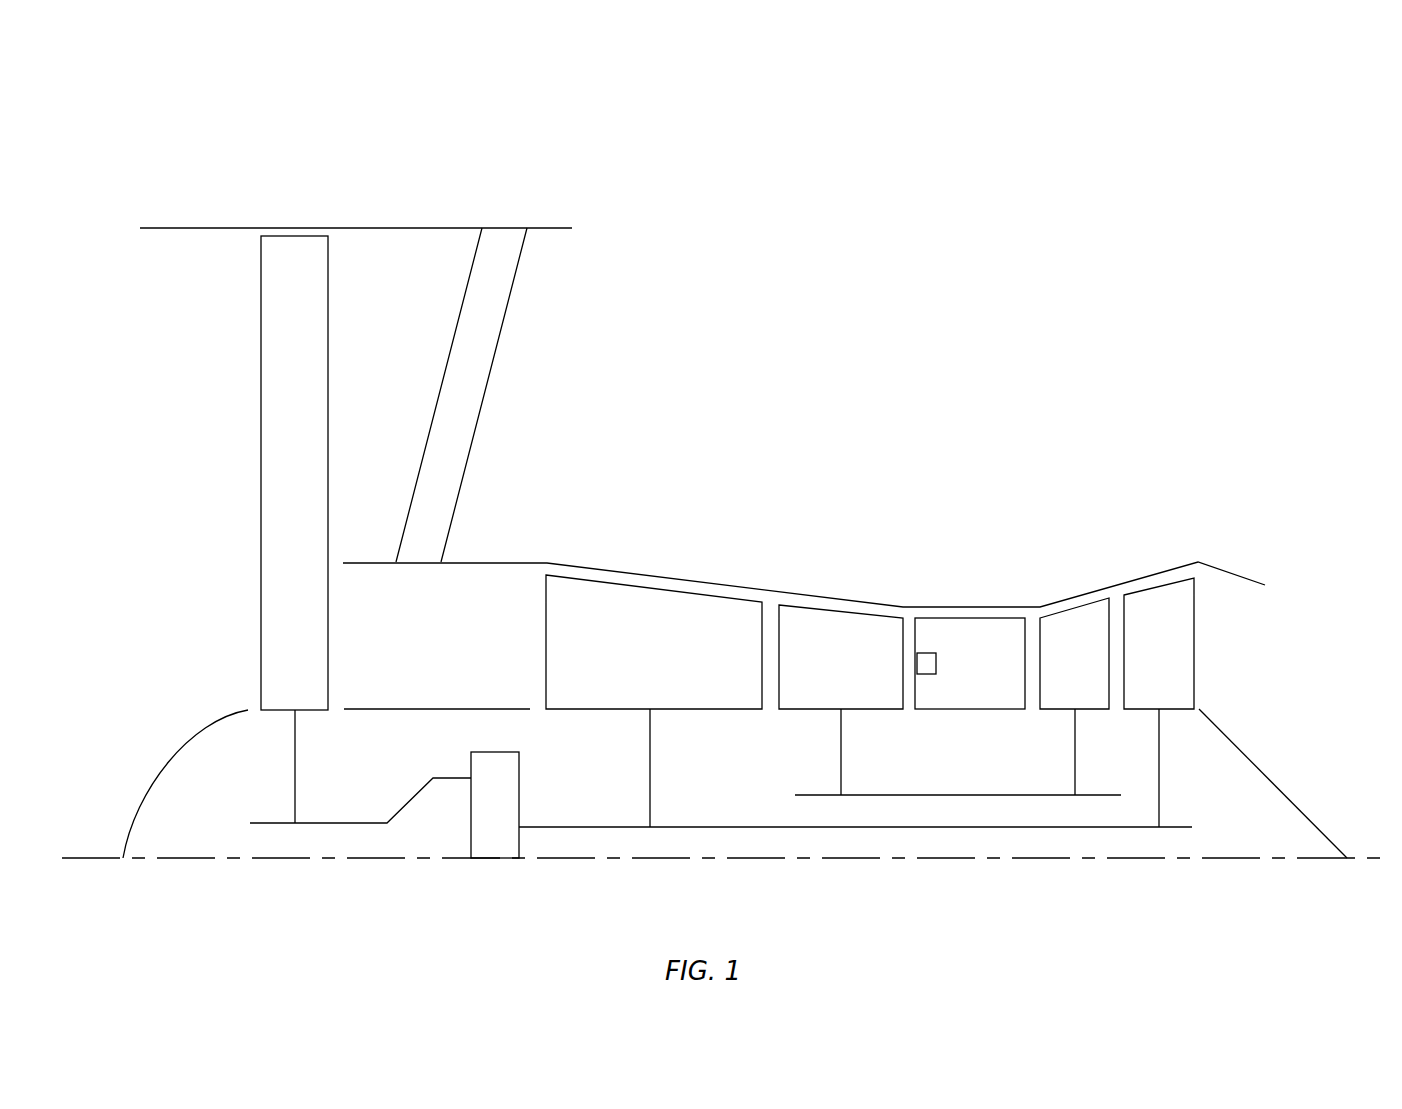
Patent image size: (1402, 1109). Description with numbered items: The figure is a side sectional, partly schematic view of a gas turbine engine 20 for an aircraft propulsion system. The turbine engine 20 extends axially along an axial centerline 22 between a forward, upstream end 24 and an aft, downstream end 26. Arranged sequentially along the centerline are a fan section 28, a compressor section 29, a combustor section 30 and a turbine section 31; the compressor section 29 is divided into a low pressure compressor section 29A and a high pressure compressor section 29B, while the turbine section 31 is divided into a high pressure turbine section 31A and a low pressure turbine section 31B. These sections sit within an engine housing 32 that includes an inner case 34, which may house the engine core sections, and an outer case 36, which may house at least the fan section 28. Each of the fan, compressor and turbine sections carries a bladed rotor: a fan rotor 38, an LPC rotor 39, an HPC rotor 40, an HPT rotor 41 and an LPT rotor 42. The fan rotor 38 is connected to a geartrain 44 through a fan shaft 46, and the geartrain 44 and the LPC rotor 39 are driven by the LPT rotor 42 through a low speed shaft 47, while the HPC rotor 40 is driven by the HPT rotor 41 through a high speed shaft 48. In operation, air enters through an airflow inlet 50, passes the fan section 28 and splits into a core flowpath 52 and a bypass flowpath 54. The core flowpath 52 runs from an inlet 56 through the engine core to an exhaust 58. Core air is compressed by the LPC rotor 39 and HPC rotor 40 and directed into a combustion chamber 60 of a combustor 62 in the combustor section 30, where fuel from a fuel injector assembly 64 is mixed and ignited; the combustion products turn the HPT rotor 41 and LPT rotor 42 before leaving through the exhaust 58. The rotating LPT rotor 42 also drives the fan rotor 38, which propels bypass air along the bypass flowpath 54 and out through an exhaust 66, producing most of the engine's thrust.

The gas turbine engine 20 is at (88, 145).
The axial centerline 22 is at (70, 870).
The forward, upstream end 24 is at (140, 228).
The aft, downstream end 26 is at (1347, 858).
The fan section 28 is at (367, 208).
The compressor section 29 is at (724, 534).
The low pressure compressor (LPC) section 29A is at (546, 497).
The high pressure compressor (HPC) section 29B is at (840, 578).
The combustor section 30 is at (915, 497).
The turbine section 31 is at (1117, 534).
The high pressure turbine (HPT) section 31A is at (1040, 497).
The low pressure turbine (LPT) section 31B is at (1158, 578).
The engine housing 32 is at (683, 228).
The inner case 34 is at (503, 537).
The outer case 36 is at (463, 222).
The fan rotor 38 is at (293, 767).
The LPC rotor 39 is at (650, 773).
The HPC rotor 40 is at (841, 741).
The HPT rotor 41 is at (1075, 740).
The LPT rotor 42 is at (1159, 768).
The geartrain 44 is at (480, 820).
The fan shaft 46 is at (340, 823).
The low speed shaft 47 is at (1103, 827).
The high speed shaft 48 is at (970, 795).
The airflow inlet 50 is at (123, 422).
The core flowpath 52 is at (404, 658).
The bypass flowpath 54 is at (376, 383).
The inlet 56 is at (341, 641).
The exhaust 58 is at (1270, 667).
The combustion chamber 60 is at (964, 678).
The combustor 62 is at (1012, 617).
The fuel injector assembly 64 is at (925, 653).
The exhaust 66 is at (570, 307).